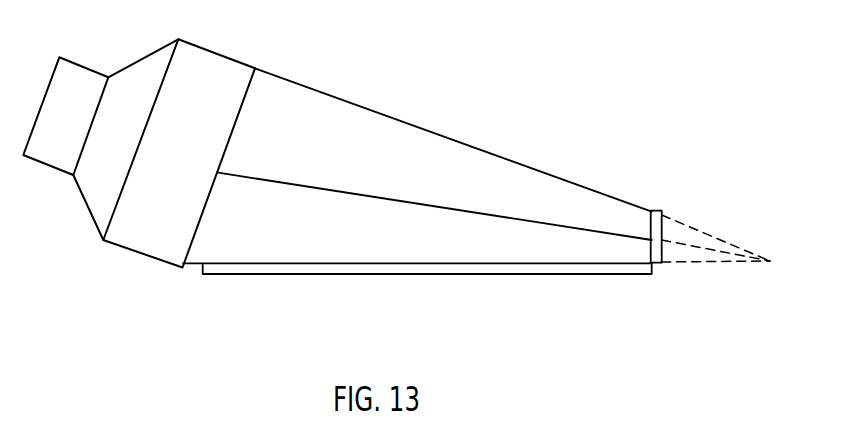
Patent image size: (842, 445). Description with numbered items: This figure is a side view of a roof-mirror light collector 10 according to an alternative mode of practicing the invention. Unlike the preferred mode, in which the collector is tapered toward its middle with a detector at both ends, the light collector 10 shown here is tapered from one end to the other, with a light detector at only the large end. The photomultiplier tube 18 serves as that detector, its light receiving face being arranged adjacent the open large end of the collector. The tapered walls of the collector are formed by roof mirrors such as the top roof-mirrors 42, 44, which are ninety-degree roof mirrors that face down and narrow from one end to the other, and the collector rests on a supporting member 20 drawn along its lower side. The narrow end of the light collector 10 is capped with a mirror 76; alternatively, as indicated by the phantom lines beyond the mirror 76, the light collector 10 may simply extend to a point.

The light collector 10 is at (458, 119).
The photomultiplier tube 18 is at (225, 60).
The base plate 20 is at (535, 268).
The top roof-mirror 42 is at (355, 125).
The top roof-mirror 44 is at (212, 242).
The mirror 76 is at (658, 210).